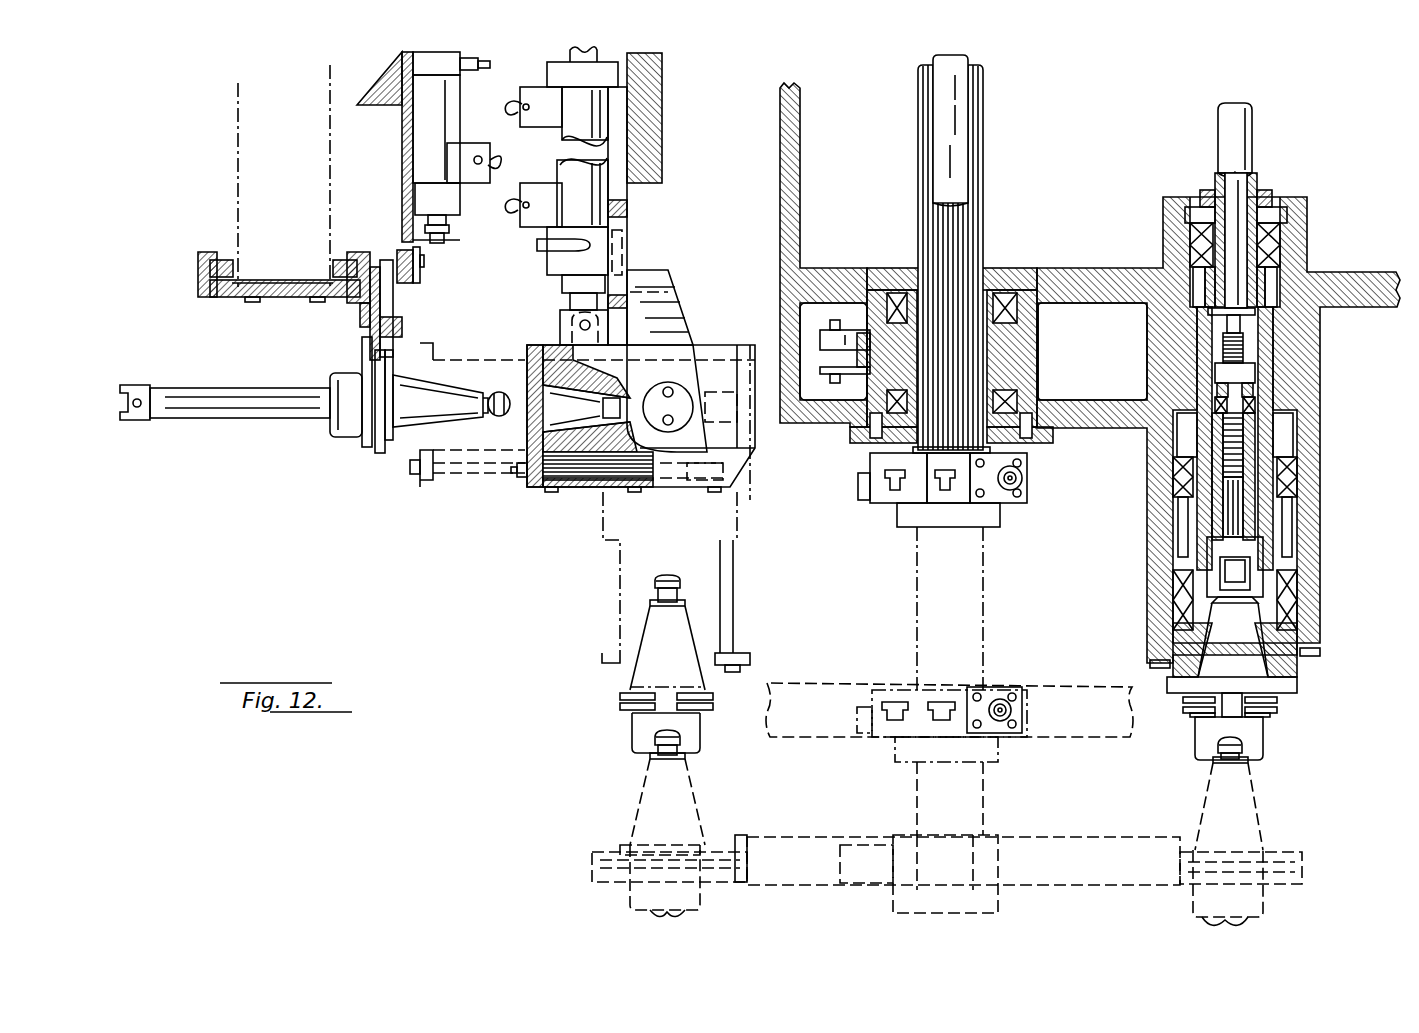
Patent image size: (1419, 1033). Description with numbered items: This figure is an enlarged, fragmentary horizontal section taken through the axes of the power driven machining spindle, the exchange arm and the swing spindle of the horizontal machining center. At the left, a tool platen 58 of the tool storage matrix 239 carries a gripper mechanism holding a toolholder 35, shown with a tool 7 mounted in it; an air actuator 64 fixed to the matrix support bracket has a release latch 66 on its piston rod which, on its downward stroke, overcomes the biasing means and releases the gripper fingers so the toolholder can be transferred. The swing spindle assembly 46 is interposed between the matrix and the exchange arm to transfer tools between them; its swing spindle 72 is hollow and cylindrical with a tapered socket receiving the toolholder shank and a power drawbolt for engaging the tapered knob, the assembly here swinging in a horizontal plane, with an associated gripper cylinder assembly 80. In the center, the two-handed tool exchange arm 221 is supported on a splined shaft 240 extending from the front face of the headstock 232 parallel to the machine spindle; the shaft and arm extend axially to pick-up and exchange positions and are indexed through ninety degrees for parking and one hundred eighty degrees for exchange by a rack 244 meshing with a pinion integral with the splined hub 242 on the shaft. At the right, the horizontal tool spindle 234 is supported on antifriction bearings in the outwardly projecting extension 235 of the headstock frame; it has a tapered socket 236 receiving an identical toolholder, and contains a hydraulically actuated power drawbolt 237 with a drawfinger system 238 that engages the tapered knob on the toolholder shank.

The tool 7 is at (212, 385).
The toolholder 35 is at (330, 428).
The swing spindle assembly 46 is at (527, 490).
The tool platen 58 is at (224, 303).
The air actuator 64 is at (423, 143).
The release latch 66 is at (417, 276).
The swing spindle 72 is at (523, 365).
The gripper cylinder assembly 80 is at (605, 195).
The tool exchange arm 221 is at (886, 508).
The headstock 232 is at (1111, 428).
The tool spindle 234 is at (1297, 688).
The outwardly projecting extension 235 is at (1322, 645).
The tapered socket 236 is at (1270, 715).
The power drawbolt 237 is at (1270, 517).
The drawfinger system 238 is at (1262, 563).
The tool storage matrix 239 is at (236, 198).
The splined shaft 240 is at (985, 232).
The splined hub 242 is at (1010, 355).
The rack 244 is at (878, 365).